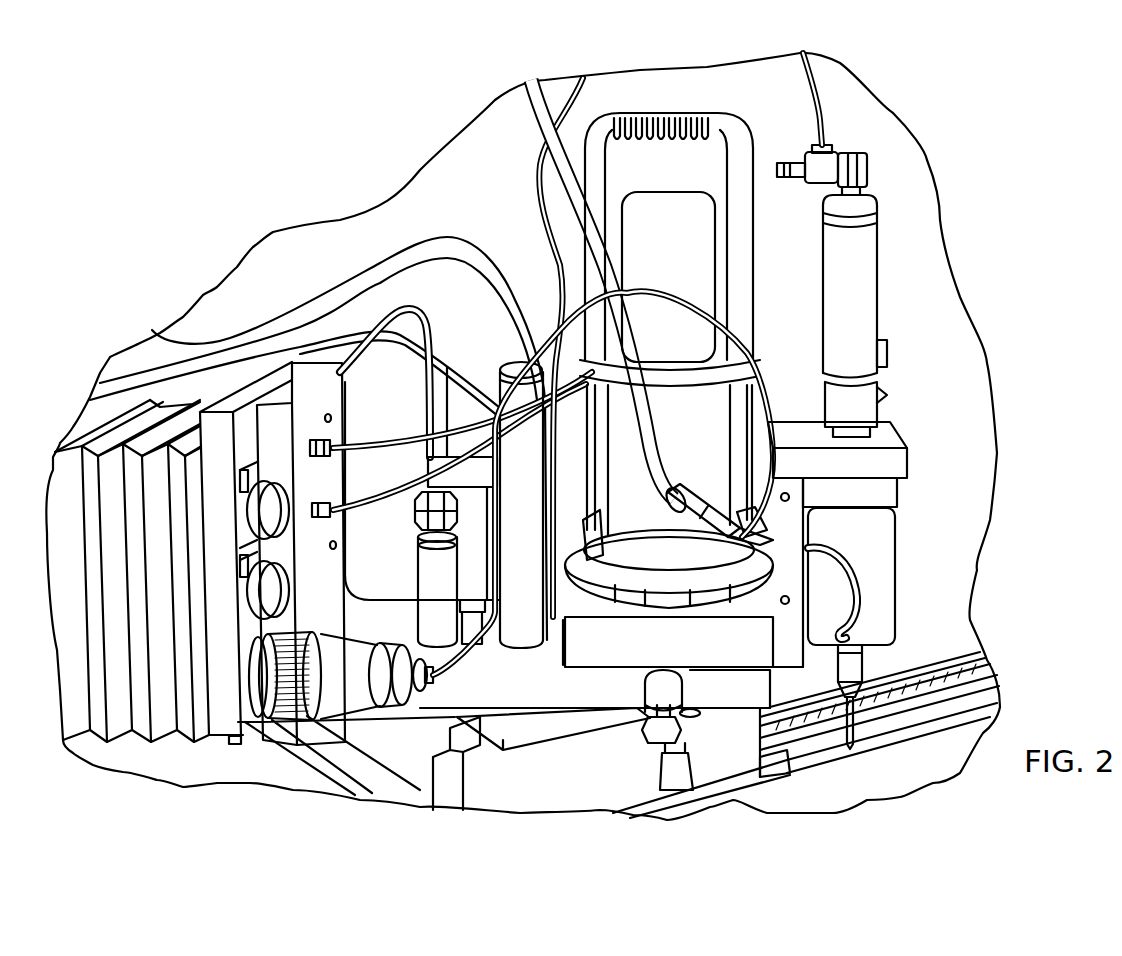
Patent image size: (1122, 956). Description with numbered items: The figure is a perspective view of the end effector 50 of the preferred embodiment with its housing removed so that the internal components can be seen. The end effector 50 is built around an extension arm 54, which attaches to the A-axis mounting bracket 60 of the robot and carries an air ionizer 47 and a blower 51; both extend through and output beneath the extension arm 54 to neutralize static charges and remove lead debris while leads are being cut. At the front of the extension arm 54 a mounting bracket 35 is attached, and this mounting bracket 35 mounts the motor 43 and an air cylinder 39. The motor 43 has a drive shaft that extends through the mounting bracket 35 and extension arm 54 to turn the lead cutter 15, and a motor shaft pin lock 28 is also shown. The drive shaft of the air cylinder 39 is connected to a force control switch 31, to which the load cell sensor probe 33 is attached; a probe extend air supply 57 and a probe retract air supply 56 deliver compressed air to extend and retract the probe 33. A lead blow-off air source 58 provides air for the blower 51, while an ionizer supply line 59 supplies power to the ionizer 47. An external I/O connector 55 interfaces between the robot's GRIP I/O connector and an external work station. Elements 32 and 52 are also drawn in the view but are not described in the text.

The lead cutter 15 is at (692, 772).
The motor shaft pin lock 28 is at (686, 722).
The force control switch 31 is at (886, 551).
The tool holder 32 is at (863, 665).
The load cell sensor probe 33 is at (855, 731).
The mounting bracket 35 is at (906, 463).
The air cylinder 39 is at (866, 279).
The motor 43 is at (734, 156).
The air ionizer 47 is at (527, 476).
The end effector 50 is at (893, 131).
The blower 51 is at (417, 571).
The hose 52 is at (532, 110).
The extension arm 54 is at (440, 690).
The external I/O connector 55 is at (355, 650).
The probe retract air supply 56 is at (354, 507).
The probe extend air supply 57 is at (357, 446).
The lead blow-off air source 58 is at (419, 314).
The ionizer supply line 59 is at (452, 242).
The A-axis mounting bracket 60 is at (300, 366).